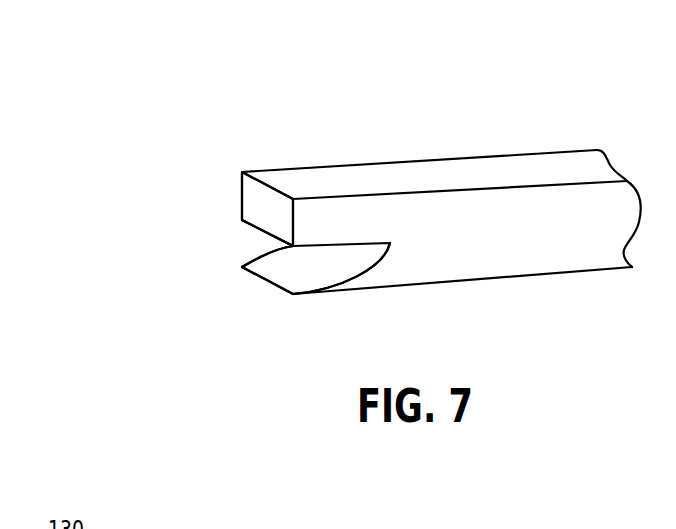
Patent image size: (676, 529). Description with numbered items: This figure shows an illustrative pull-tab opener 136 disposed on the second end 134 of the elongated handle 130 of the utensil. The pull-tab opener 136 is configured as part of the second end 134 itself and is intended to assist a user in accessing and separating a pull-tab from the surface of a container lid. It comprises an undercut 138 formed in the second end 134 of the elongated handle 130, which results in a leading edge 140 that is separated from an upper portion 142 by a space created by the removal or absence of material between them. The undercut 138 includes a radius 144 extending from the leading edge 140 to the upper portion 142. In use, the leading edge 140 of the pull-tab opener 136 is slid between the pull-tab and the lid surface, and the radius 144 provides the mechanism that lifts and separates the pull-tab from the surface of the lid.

The elongated handle 130 is at (327, 125).
The second end 134 is at (203, 232).
The pull-tab opener 136 is at (193, 277).
The undercut 138 is at (305, 270).
The leading edge 140 is at (258, 278).
The upper portion 142 is at (242, 193).
The radius 144 is at (372, 272).